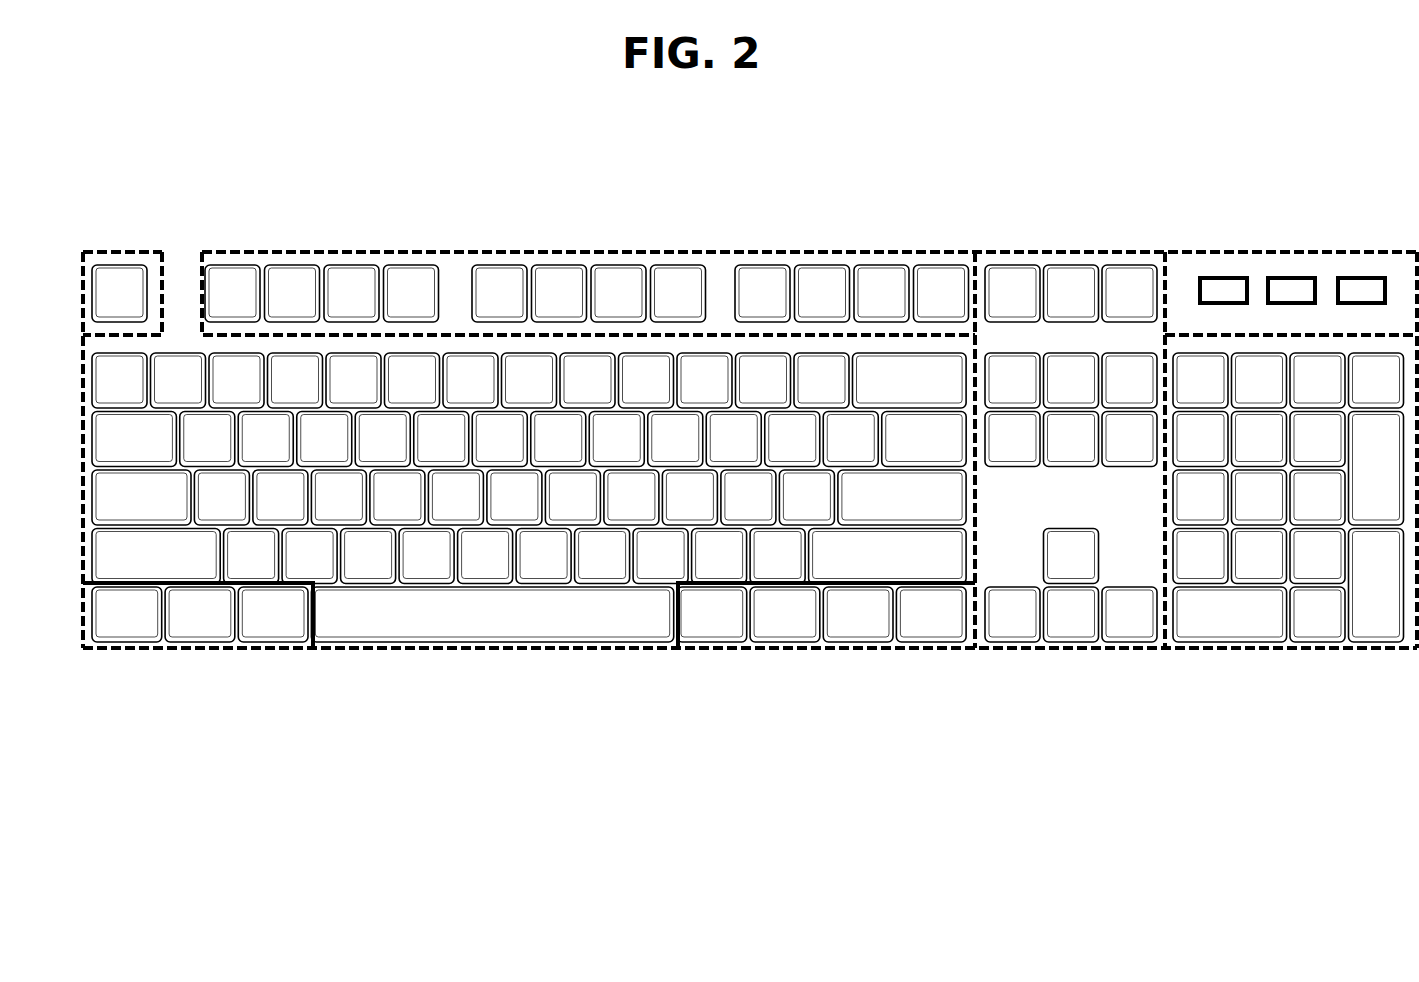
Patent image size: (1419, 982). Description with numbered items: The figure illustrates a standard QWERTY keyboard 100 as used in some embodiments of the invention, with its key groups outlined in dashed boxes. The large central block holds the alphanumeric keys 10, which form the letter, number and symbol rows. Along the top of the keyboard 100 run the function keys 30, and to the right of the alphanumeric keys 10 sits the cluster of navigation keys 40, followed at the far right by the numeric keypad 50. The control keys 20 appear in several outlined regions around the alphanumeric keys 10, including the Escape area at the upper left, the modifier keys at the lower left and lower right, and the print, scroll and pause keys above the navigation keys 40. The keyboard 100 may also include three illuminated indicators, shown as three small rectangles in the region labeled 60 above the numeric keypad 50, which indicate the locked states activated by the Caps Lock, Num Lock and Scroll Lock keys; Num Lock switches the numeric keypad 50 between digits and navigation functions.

The keyboard 100 is at (136, 187).
The alphanumeric keys 10 is at (462, 652).
The control keys 20 is at (149, 250).
The function keys 30 is at (468, 250).
The navigation keys 40 is at (1067, 652).
The numeric keypad 50 is at (1258, 652).
The indicator light region 60 is at (1278, 250).